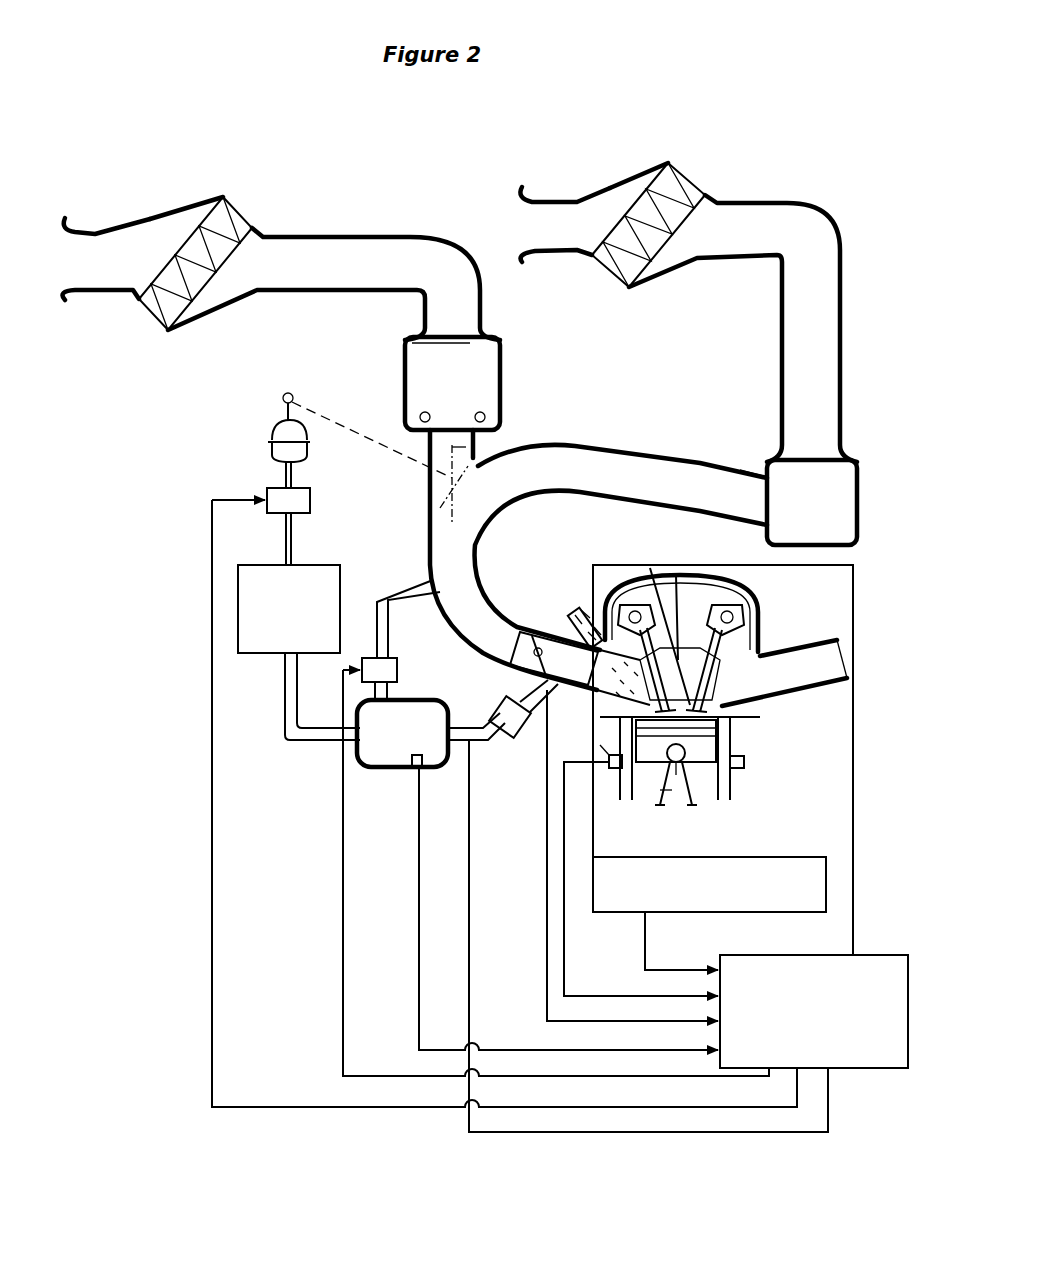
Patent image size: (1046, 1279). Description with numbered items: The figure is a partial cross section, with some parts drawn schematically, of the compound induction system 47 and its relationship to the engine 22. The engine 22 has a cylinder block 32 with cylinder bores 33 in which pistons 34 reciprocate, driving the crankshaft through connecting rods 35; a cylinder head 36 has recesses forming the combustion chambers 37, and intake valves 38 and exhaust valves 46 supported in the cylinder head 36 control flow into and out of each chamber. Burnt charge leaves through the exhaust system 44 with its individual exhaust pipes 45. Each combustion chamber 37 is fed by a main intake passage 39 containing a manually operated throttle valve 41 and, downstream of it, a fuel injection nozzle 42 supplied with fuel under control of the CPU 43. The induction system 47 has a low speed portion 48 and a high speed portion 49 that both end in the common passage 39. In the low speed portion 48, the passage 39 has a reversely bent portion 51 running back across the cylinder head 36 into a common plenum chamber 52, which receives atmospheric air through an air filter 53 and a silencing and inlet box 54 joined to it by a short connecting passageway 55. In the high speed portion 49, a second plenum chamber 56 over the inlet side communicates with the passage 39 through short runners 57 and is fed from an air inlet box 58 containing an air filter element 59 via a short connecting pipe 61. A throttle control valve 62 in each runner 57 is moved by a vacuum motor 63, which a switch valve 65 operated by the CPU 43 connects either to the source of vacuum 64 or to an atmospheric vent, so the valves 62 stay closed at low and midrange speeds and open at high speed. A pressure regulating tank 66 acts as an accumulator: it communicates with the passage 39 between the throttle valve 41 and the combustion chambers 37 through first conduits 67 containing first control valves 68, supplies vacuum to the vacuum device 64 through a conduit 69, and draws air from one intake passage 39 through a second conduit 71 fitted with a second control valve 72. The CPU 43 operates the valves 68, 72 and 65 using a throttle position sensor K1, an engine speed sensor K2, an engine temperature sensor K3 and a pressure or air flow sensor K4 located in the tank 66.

The engine 22 is at (797, 606).
The cylinder block 32 is at (616, 775).
The cylinder bores 33 is at (705, 790).
The pistons 34 is at (700, 770).
The connecting rods 35 is at (655, 793).
The cylinder head 36 is at (760, 636).
The combustion chambers 37 is at (705, 752).
The intake valves 38 is at (640, 600).
The main intake passage 39 is at (538, 648).
The throttle valve 41 is at (530, 640).
The fuel injection nozzle 42 is at (588, 598).
The CPU 43 is at (765, 955).
The exhaust system 44 is at (830, 702).
The exhaust pipes 45 is at (778, 703).
The exhaust valves 46 is at (676, 575).
The engine induction system 47 is at (404, 308).
The low speed portion 48 is at (850, 268).
The high speed portion 49 is at (357, 205).
The reversely bent portion 51 is at (740, 468).
The plenum chamber 52 is at (858, 500).
The air filter 53 is at (683, 183).
The silencing and inlet box 54 is at (597, 305).
The connecting passageway 55 is at (765, 200).
The second plenum chamber 56 is at (500, 345).
The short runners 57 is at (425, 485).
The air inlet box 58 is at (128, 320).
The air filter element 59 is at (247, 212).
The short connecting pipe 61 is at (395, 235).
The throttle control valve 62 is at (517, 425).
The vacuum motor 63 is at (283, 430).
The source of vacuum 64 is at (267, 655).
The switch valve 65 is at (268, 496).
The pressure regulating tank 66 is at (355, 757).
The first conduits 67 is at (470, 770).
The first control valves 68 is at (505, 725).
The conduit 69 is at (285, 745).
The second conduit 71 is at (388, 597).
The second control valve 72 is at (397, 670).
The throttle position sensor K1 is at (500, 683).
The engine speed sensor K2 is at (826, 885).
The engine temperature sensor K3 is at (605, 748).
The pressure or air flow sensor K4 is at (410, 770).